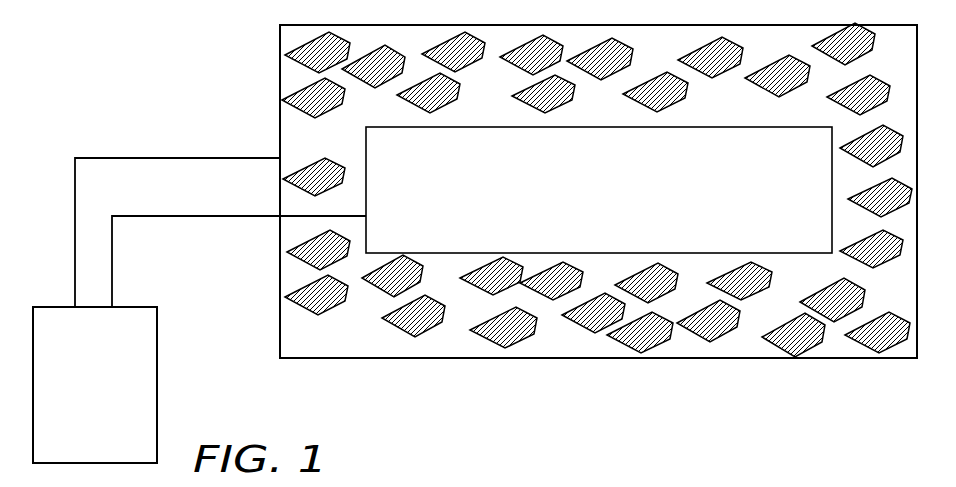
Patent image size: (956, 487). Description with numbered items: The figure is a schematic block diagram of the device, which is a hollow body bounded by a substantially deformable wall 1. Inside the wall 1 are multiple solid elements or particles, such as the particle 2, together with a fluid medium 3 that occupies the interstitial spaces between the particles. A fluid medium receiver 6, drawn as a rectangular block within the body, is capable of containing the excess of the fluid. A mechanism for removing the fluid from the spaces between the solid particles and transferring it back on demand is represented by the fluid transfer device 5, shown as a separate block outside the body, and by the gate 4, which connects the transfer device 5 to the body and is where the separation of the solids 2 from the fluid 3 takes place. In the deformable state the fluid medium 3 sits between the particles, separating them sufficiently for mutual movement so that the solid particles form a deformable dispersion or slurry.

The deformable wall 1 is at (822, 358).
The particle 2 is at (512, 340).
The fluid medium 3 is at (307, 343).
The gate 4 is at (280, 150).
The fluid transfer device 5 is at (75, 402).
The fluid medium receiver 6 is at (671, 222).